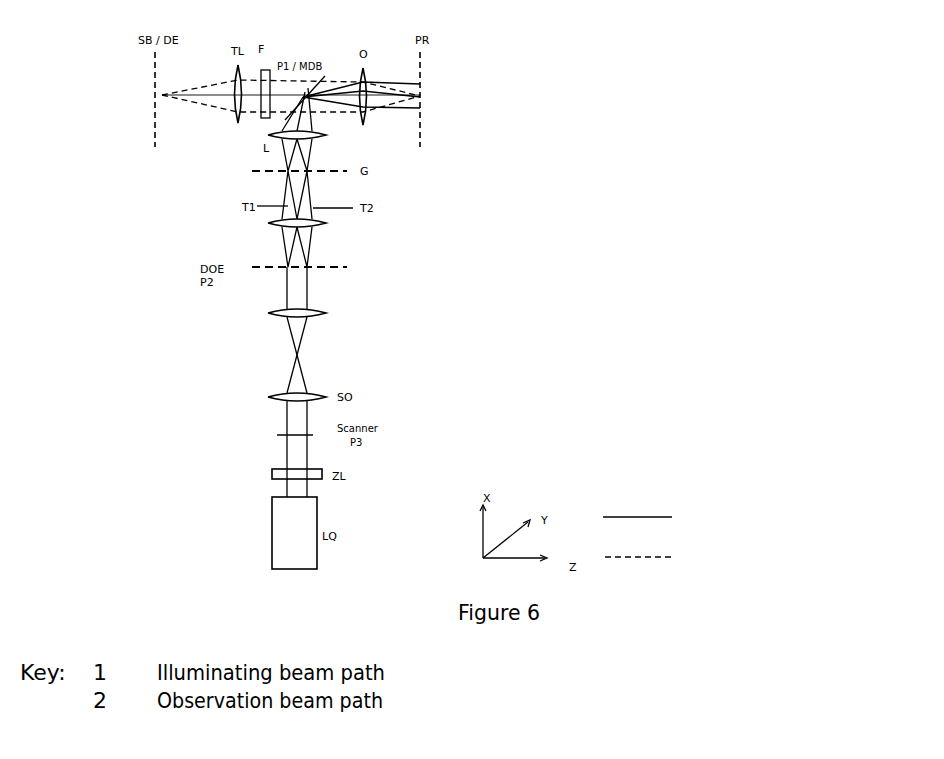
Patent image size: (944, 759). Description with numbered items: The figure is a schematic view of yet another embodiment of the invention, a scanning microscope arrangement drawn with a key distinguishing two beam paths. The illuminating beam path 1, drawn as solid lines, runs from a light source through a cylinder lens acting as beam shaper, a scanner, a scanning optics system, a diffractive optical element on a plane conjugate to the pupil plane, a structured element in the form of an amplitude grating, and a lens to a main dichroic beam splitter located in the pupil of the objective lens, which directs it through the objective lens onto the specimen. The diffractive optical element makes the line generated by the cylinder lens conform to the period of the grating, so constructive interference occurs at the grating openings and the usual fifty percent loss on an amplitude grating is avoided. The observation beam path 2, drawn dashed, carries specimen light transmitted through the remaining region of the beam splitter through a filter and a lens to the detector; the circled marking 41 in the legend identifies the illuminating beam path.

The illuminating beam path 1 is at (517, 303).
The Illuminating beam path 41 is at (517, 303).
The observation beam path 2 is at (521, 338).